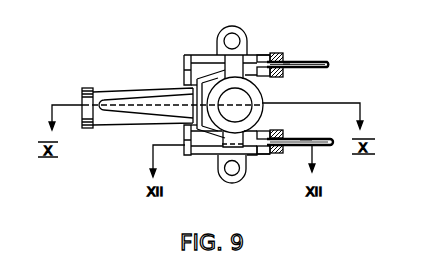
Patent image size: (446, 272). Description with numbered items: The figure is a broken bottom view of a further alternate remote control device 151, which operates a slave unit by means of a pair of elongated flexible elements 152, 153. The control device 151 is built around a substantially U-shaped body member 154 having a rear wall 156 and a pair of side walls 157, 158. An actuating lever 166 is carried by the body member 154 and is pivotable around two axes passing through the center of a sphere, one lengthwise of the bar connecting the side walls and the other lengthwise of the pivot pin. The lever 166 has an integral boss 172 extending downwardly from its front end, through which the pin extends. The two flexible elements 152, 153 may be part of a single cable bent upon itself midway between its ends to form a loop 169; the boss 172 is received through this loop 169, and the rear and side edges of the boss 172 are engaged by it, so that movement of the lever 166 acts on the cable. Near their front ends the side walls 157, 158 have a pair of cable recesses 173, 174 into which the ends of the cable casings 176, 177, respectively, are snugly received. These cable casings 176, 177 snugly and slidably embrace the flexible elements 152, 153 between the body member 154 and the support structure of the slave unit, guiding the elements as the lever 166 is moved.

The control device 151 is at (262, 47).
The elongated flexible element 152 is at (335, 146).
The elongated flexible element 153 is at (331, 63).
The body member 154 is at (207, 159).
The rear wall 156 is at (185, 131).
The side wall 157 is at (250, 155).
The side wall 158 is at (203, 60).
The actuating lever 166 is at (110, 119).
The loop 169 is at (193, 88).
The boss 172 is at (263, 101).
The cable recess 173 is at (287, 139).
The cable recess 174 is at (287, 60).
The cable casing 176 is at (305, 139).
The cable casing 177 is at (319, 68).